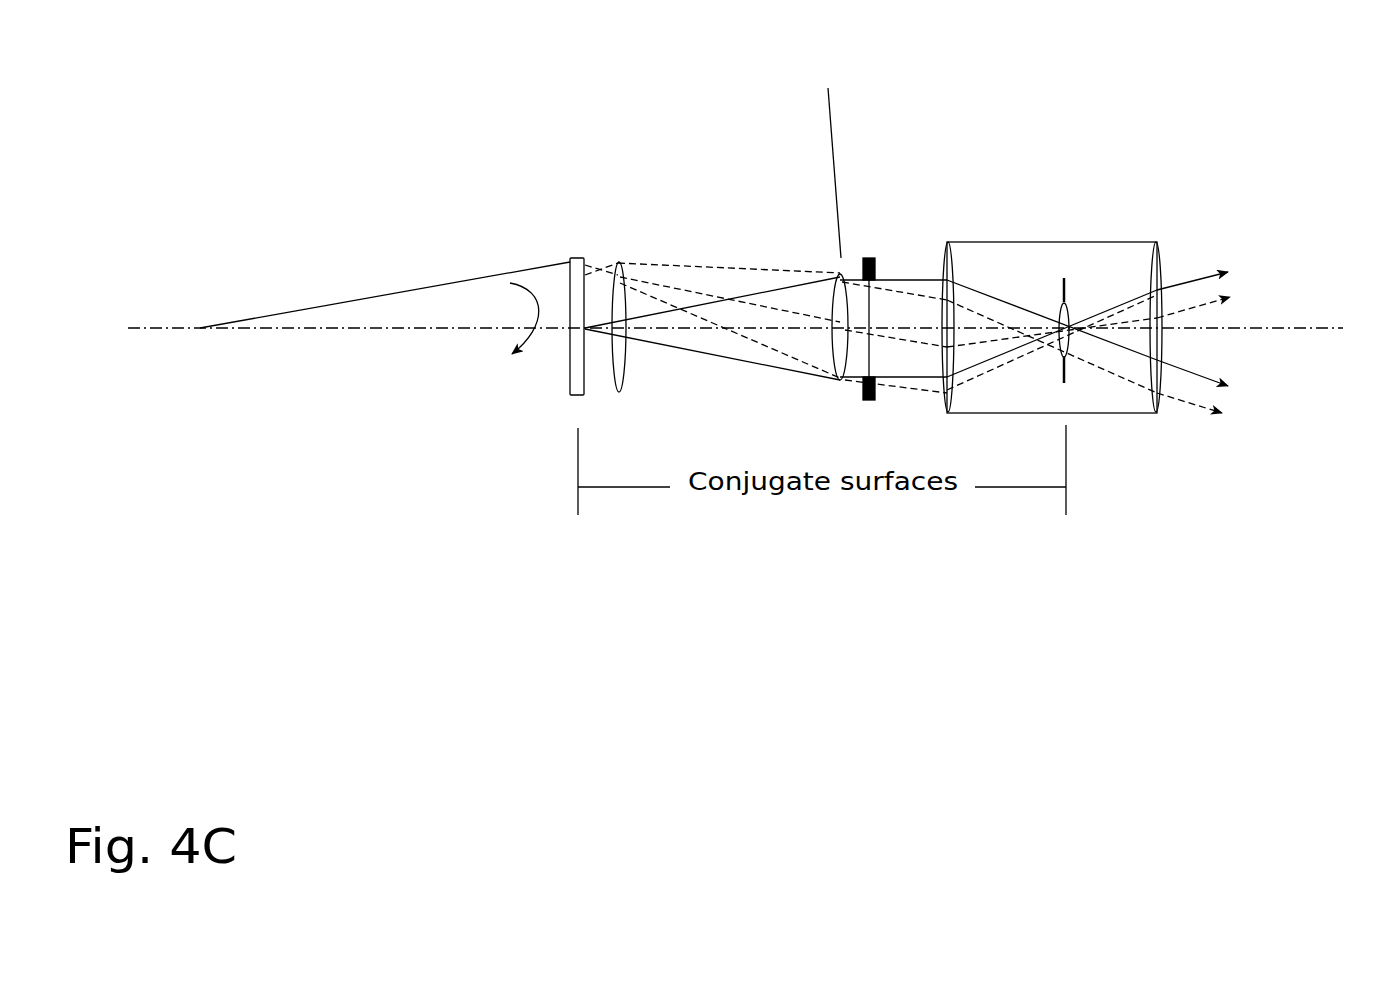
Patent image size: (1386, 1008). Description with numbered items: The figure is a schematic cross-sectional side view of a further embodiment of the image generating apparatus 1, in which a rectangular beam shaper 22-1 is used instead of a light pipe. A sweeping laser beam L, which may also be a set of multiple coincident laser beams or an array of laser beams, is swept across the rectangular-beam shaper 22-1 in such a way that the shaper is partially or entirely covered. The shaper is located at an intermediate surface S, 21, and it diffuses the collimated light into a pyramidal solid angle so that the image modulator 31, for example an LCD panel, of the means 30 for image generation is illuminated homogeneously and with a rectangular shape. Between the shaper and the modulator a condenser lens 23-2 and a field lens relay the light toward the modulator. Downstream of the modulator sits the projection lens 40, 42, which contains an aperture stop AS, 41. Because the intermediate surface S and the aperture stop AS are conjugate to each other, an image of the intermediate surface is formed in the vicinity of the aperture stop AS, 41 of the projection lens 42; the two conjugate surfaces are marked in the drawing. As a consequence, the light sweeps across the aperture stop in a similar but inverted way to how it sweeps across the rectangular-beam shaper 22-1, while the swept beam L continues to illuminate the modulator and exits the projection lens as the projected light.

The projection system 1 is at (1245, 732).
The intermediate surface S 21 is at (577, 492).
The rectangular beam shaper 22-1 is at (565, 255).
The condenser lens 23-2 is at (665, 180).
The means for image generation 30 is at (1039, 248).
The image modulator 31 is at (883, 262).
The projection lens 40 is at (1158, 280).
The aperture stop AS 41 is at (1115, 417).
The projection lens 42 is at (1112, 272).
The laser beam L is at (380, 295).